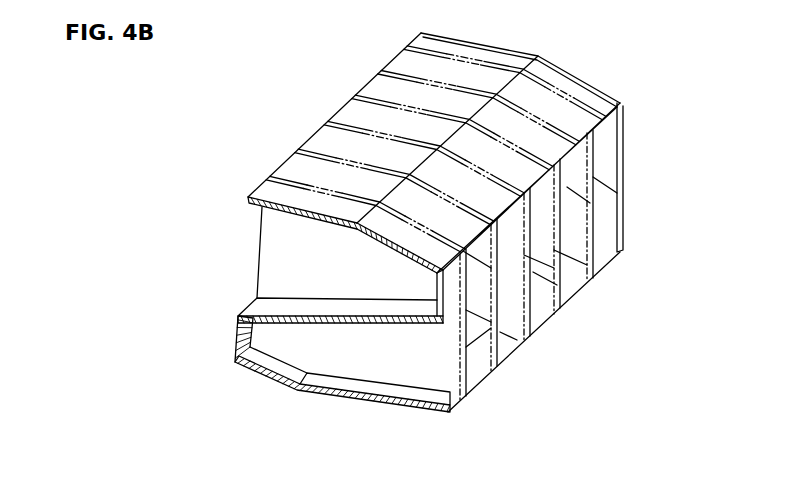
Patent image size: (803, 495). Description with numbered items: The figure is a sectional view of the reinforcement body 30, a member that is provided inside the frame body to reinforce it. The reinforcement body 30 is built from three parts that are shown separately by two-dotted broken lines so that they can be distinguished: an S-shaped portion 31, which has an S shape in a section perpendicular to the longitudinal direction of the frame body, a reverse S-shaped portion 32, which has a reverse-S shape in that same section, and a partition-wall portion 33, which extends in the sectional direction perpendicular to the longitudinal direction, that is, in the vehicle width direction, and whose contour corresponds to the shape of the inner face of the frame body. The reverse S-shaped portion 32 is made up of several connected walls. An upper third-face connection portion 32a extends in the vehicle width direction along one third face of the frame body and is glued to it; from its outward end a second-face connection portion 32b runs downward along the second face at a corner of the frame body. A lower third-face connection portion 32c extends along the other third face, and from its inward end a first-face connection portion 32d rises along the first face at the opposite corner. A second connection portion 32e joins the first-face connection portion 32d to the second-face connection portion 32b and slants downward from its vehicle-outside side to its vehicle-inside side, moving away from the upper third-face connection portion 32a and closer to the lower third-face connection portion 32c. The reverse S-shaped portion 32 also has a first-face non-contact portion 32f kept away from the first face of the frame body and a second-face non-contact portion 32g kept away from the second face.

The reinforcement body 30 is at (578, 69).
The S-shaped portion 31 is at (345, 98).
The reverse S-shaped portion 32 is at (309, 132).
The third-face connection portion 32a is at (294, 213).
The second-face connection portion 32b is at (443, 281).
The third-face connection portion 32c is at (351, 398).
The first-face connection portion 32d is at (237, 333).
The second connection portion 32e is at (313, 314).
The first-face non-contact portion 32f is at (250, 248).
The second-face non-contact portion 32g is at (457, 380).
The partition-wall portion 33 is at (552, 317).